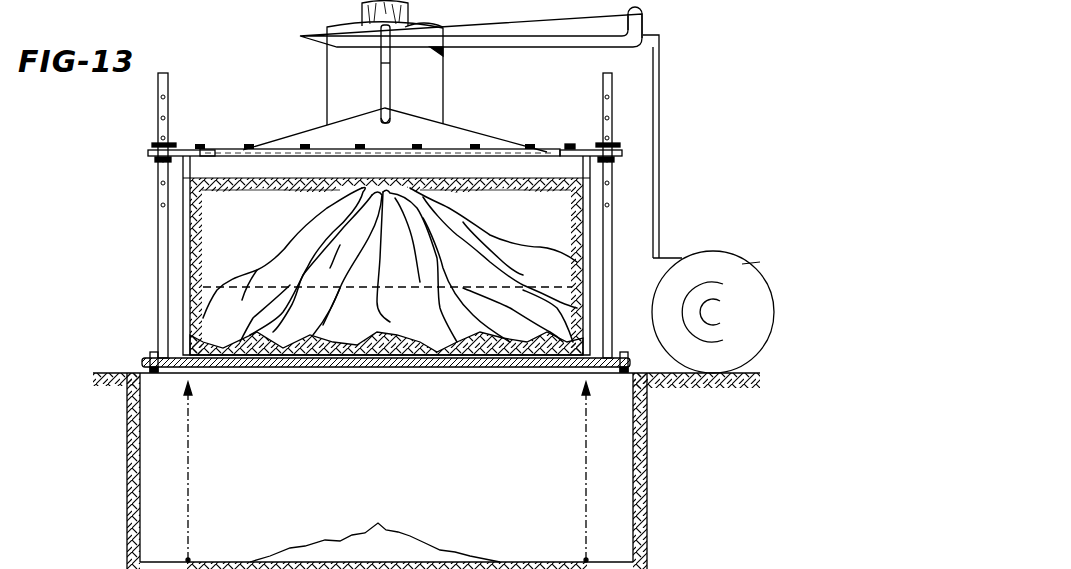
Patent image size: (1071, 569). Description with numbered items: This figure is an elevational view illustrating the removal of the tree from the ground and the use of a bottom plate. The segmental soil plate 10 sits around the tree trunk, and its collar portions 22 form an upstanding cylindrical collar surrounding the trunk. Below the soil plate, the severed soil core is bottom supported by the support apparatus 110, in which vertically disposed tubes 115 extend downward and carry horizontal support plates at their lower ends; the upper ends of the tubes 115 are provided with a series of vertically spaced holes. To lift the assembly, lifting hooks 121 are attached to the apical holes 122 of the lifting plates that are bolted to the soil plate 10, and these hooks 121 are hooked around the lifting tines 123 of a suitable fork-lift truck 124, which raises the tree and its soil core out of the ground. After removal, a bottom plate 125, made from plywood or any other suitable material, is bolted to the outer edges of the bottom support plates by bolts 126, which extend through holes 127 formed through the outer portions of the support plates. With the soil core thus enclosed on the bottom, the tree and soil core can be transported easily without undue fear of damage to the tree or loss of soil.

The segmental soil plate 10 is at (234, 162).
The semi-cylindrical collar portion 22 is at (327, 87).
The support apparatus 110 is at (157, 141).
The vertically disposed rod or tube 115 is at (159, 221).
The lifting hook 121 is at (389, 97).
The apical hole 122 is at (387, 122).
The lifting tine 123 is at (535, 47).
The fork-lift truck 124 is at (655, 50).
The bottom plate 125 is at (334, 367).
The bolt 126 is at (157, 373).
The hole 127 is at (150, 352).